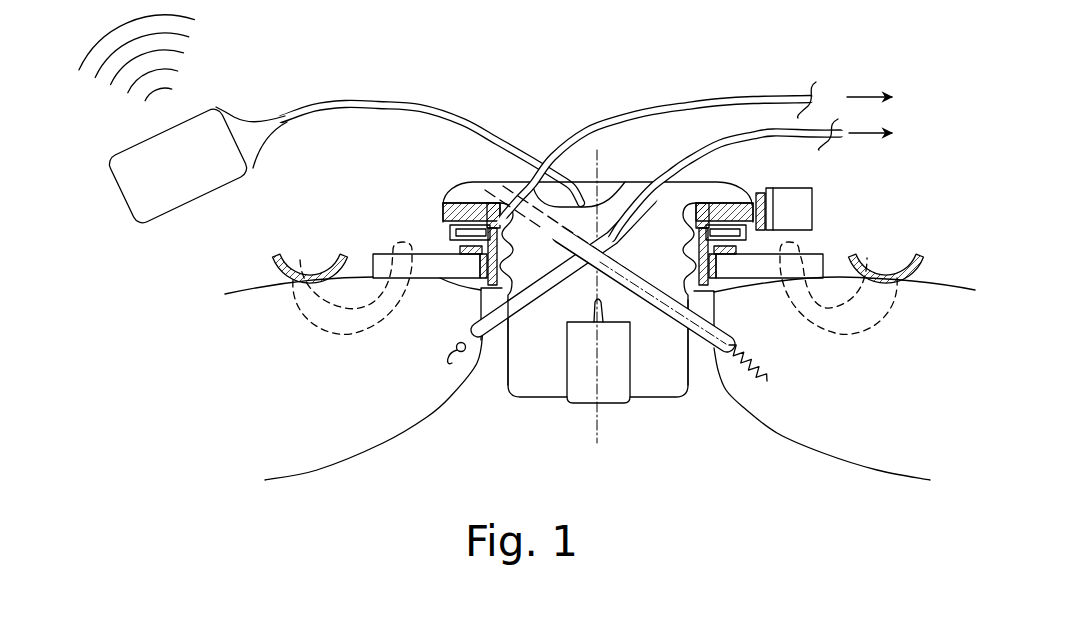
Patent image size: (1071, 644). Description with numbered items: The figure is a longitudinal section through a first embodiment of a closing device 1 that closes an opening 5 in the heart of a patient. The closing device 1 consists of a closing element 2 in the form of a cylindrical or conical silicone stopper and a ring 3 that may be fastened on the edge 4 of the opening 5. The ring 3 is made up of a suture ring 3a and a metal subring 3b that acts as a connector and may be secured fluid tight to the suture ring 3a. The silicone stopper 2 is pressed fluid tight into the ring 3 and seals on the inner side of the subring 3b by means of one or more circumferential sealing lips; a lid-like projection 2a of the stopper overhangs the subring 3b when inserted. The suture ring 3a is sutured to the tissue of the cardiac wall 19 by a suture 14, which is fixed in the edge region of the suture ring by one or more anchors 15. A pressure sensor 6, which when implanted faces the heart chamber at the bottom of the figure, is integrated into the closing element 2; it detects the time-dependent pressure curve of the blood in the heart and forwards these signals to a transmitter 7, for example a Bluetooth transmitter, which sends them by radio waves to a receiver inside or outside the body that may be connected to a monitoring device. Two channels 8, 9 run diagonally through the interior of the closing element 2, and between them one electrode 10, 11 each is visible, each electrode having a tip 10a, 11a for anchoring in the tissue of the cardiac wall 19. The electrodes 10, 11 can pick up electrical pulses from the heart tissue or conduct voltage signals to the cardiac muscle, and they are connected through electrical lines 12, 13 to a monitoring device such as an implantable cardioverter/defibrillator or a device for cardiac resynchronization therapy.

The closing device 1 is at (428, 193).
The closing element 2 is at (678, 397).
The lid-like projection 2a is at (473, 180).
The ring 3 is at (440, 238).
The suture ring 3a is at (383, 256).
The metal subring 3b is at (480, 289).
The edge 4 is at (447, 283).
The opening 5 is at (496, 388).
The pressure sensor 6 is at (612, 397).
The transmitter 7 is at (222, 124).
The channel 8 is at (636, 287).
The channel 9 is at (618, 220).
The electrode 10 is at (734, 338).
The tip 10a is at (760, 380).
The electrode 11 is at (516, 307).
The tip 11a is at (465, 352).
The electrical line 12 is at (770, 136).
The electrical line 13 is at (712, 100).
The suture 14 is at (307, 312).
The anchor 15 is at (275, 266).
The cardiac wall 19 is at (288, 452).